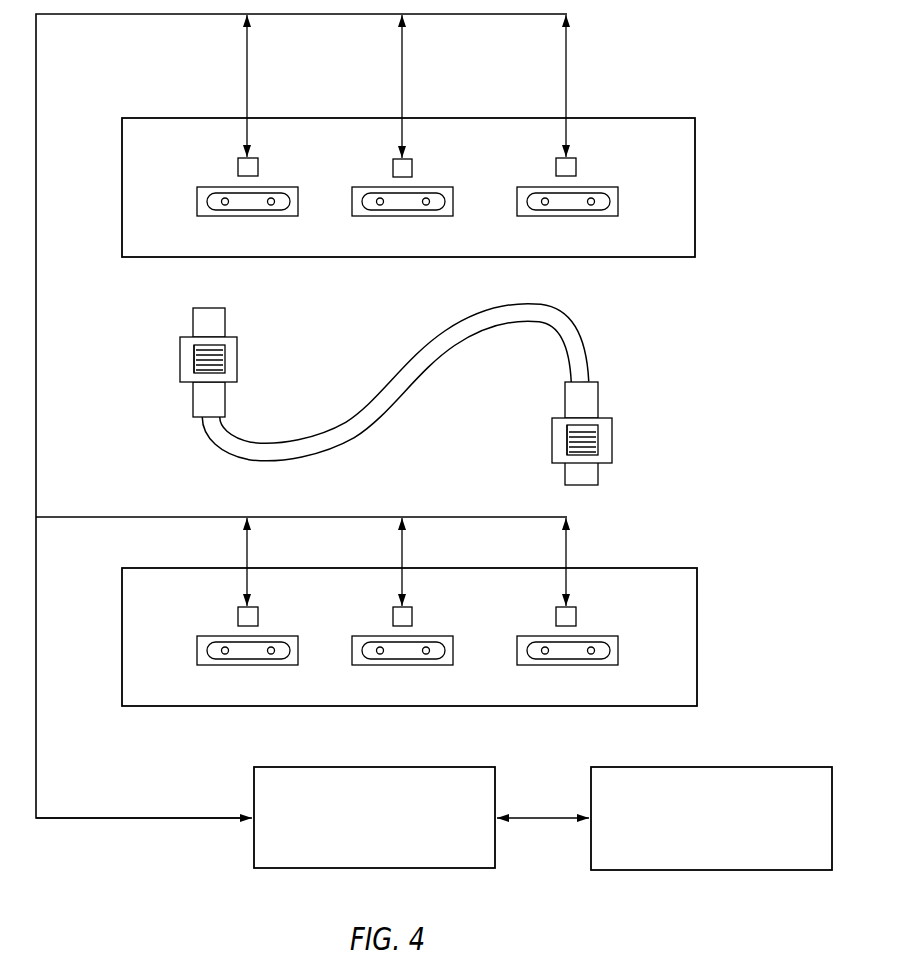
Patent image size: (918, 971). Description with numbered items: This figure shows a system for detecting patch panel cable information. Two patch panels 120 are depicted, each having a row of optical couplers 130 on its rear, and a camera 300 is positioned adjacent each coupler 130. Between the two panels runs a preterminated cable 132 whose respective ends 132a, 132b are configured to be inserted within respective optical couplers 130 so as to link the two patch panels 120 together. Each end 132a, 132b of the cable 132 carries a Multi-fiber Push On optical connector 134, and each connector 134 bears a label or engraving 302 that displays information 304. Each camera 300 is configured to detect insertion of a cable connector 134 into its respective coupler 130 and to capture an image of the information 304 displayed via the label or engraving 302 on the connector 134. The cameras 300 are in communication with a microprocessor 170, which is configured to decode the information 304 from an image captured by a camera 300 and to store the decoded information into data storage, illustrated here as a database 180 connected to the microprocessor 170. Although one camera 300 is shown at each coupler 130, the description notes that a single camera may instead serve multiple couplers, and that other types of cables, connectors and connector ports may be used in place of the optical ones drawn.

The patch panel 120 is at (695, 197).
The optical coupler 130 is at (244, 217).
The camera 300 is at (258, 167).
The preterminated cable 132 is at (441, 344).
The cable end 132a is at (236, 312).
The cable end 132b is at (614, 471).
The optical connector 134 is at (237, 350).
The label/engraving 302 is at (194, 355).
The information 304 is at (210, 358).
The microprocessor 170 is at (391, 843).
The database 180 is at (728, 843).